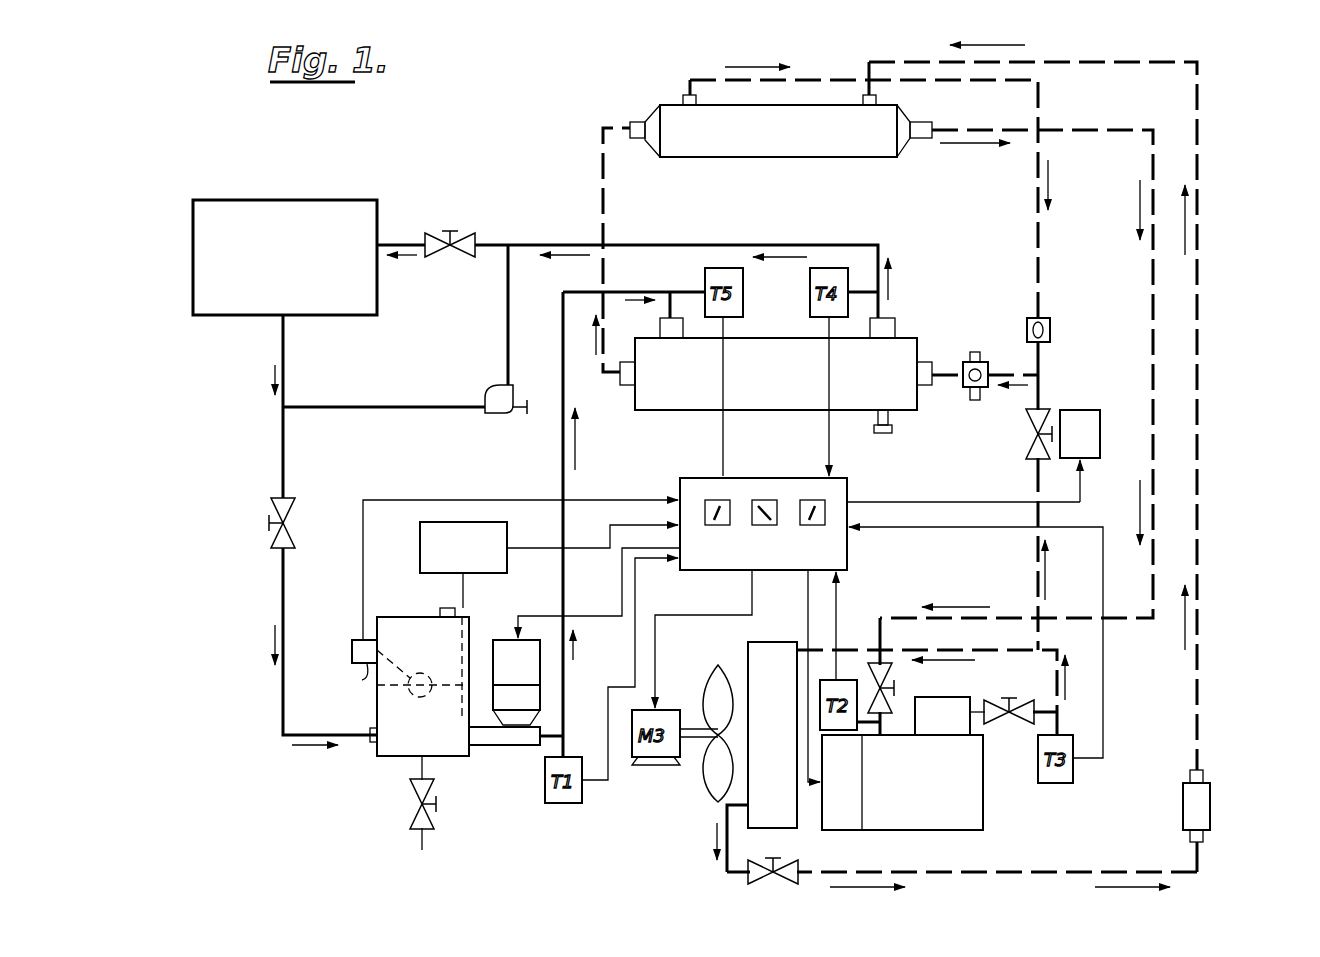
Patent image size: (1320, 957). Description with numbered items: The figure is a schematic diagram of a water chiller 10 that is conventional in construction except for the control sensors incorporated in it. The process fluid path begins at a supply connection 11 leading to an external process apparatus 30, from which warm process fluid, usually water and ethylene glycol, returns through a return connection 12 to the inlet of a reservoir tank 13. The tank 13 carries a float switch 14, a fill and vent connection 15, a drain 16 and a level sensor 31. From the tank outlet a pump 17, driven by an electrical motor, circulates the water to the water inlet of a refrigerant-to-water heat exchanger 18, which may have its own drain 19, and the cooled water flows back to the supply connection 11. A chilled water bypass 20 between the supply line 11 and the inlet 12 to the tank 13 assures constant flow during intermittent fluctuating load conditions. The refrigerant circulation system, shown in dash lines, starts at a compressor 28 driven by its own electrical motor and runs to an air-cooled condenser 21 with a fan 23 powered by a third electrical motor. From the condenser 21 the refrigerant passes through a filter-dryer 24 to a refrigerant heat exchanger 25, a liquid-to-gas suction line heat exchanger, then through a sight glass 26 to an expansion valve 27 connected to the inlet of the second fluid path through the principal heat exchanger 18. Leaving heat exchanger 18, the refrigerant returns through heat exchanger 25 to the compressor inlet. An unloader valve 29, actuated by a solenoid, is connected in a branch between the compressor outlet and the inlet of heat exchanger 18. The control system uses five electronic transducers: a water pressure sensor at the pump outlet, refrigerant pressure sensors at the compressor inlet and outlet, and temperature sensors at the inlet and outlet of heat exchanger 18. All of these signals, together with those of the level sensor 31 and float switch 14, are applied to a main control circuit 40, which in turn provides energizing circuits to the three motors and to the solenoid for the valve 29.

The water chiller 10 is at (556, 185).
The supply connection 11 is at (398, 245).
The return connection 12 is at (283, 480).
The reservoir tank 13 is at (372, 752).
The float switch 14 is at (352, 648).
The fill and vent connection 15 is at (442, 608).
The drain 16 is at (412, 824).
The pump 17 is at (540, 700).
The refrigerant-to-water heat exchanger 18 is at (690, 412).
The drain 19 is at (876, 425).
The chilled water bypass 20 is at (497, 414).
The condenser 21 is at (790, 642).
The fan 23 is at (718, 672).
The filter-dryer 24 is at (1212, 790).
The refrigerant heat exchanger 25 is at (812, 158).
The sight glass 26 is at (1050, 318).
The expansion valve 27 is at (1002, 336).
The compressor 28 is at (922, 830).
The unloader valve 29 is at (1028, 450).
The process apparatus 30 is at (317, 200).
The level sensor 31 is at (420, 560).
The main control circuit 40 is at (732, 575).